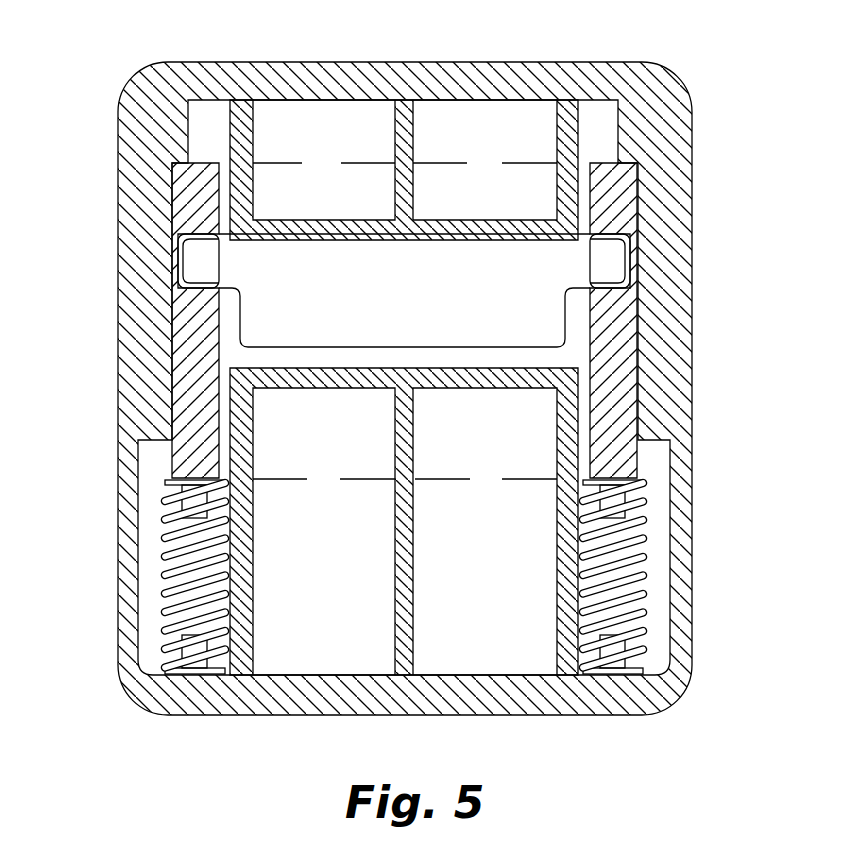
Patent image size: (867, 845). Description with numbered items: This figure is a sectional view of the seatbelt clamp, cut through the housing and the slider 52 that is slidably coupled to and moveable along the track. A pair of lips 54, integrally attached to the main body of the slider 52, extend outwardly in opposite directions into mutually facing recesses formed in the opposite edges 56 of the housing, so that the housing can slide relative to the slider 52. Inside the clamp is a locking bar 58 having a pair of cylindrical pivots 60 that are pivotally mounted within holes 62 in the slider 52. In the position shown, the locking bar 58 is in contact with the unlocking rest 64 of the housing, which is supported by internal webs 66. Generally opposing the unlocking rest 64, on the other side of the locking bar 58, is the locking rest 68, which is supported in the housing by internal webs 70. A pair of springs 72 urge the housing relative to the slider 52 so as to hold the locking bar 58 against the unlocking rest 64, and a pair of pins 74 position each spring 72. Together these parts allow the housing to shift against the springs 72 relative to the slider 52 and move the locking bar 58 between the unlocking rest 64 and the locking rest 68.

The slider 52 is at (408, 390).
The lips 54 is at (185, 192).
The opposite edges of housing 56 is at (177, 148).
The locking bar 58 is at (408, 262).
The cylindrical pivots 60 is at (197, 252).
The holes 62 is at (158, 297).
The unlocking rest 64 is at (538, 235).
The internal webs 66 is at (238, 133).
The locking rest 68 is at (330, 564).
The internal webs 70 is at (238, 653).
The springs 72 is at (167, 593).
The pins 74 is at (192, 650).